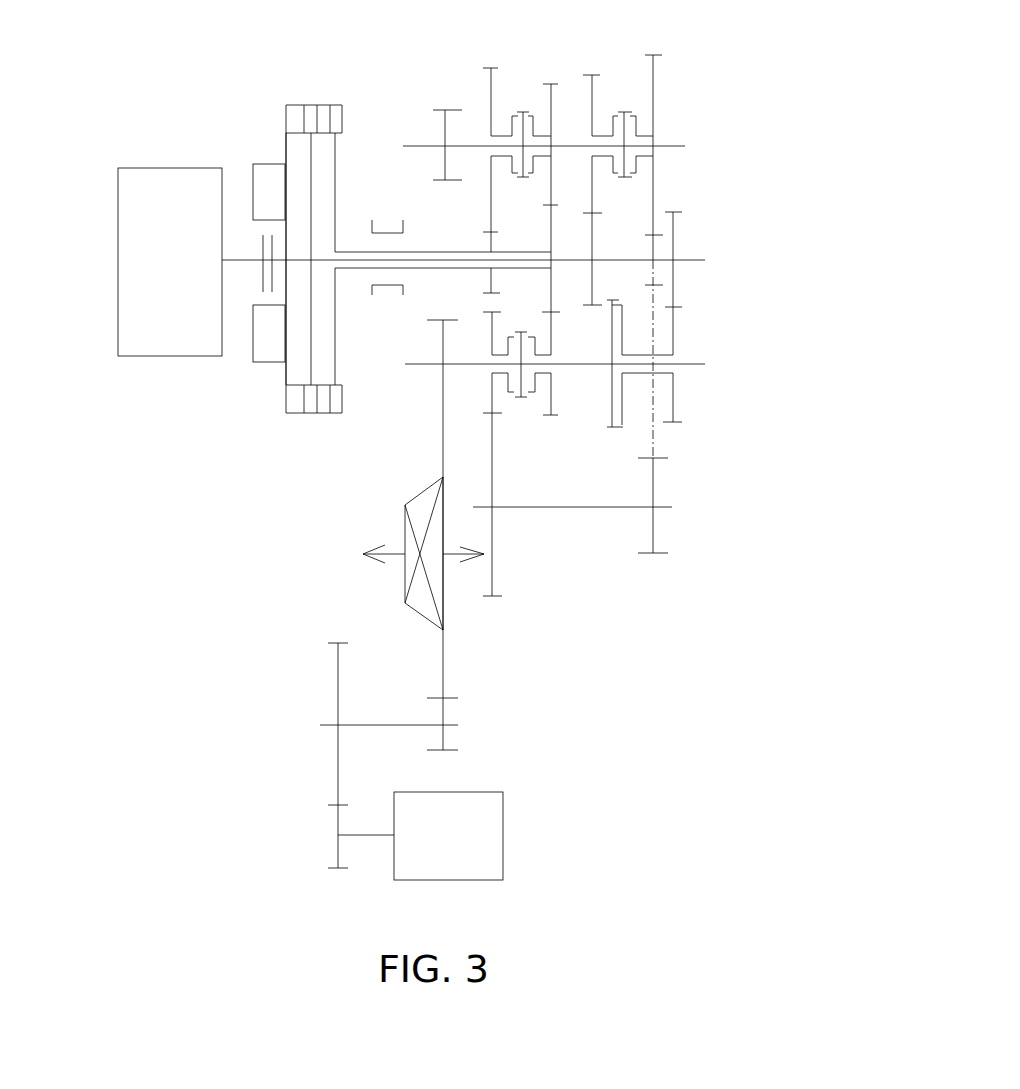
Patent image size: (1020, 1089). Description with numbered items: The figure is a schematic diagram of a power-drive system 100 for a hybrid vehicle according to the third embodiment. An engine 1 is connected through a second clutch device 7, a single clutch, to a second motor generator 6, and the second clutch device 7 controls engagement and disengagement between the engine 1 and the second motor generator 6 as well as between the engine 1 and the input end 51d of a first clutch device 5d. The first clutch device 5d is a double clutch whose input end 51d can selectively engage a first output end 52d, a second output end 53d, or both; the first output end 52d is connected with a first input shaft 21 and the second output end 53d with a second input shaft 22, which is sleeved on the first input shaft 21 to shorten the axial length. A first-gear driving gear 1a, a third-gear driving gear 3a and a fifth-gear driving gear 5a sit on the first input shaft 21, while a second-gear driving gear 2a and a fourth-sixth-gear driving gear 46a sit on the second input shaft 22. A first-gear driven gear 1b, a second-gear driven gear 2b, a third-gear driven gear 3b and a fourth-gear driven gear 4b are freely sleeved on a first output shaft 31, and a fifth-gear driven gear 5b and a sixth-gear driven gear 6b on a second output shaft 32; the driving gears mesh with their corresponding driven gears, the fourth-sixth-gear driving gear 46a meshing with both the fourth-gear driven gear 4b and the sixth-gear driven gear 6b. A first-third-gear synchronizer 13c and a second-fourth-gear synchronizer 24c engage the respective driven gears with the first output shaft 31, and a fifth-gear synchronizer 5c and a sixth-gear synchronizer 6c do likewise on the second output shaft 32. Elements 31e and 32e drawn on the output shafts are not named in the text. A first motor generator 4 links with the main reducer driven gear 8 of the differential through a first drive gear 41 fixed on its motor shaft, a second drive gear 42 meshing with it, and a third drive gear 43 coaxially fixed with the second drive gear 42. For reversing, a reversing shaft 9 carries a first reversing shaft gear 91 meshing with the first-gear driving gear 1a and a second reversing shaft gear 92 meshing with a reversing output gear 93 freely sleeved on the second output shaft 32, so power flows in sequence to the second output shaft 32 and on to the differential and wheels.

The power-drive system 100 is at (808, 71).
The engine 1 is at (132, 236).
The first-gear driving gear 1a is at (650, 240).
The first-gear driven gear 1b is at (653, 85).
The second-gear driving gear 2a is at (490, 232).
The second-gear driven gear 2b is at (491, 68).
The third-gear driving gear 3a is at (593, 240).
The third-gear driven gear 3b is at (593, 75).
The first motor generator 4 is at (463, 847).
The fourth-gear driven gear 4b is at (552, 83).
The fifth-gear driving gear 5a is at (673, 283).
The fifth-gear driven gear 5b is at (673, 395).
The fifth-gear synchronizer 5c is at (612, 420).
The first clutch device 5d is at (222, 375).
The second motor generator 6 is at (270, 180).
The sixth-gear driven gear 6b is at (551, 383).
The sixth-gear synchronizer 6c is at (521, 400).
The second clutch device 7 is at (264, 240).
The main reducer driven gear 8 is at (443, 450).
The reversing shaft 9 is at (672, 507).
The first-third-gear synchronizer 13c is at (626, 112).
The first input shaft 21 is at (705, 260).
The second input shaft 22 is at (400, 273).
The second-fourth-gear synchronizer 24c is at (523, 110).
The first output shaft 31 is at (685, 146).
The countershaft gear 31e is at (433, 110).
The second output shaft 32 is at (705, 364).
The countershaft gear shaft 32e is at (435, 385).
The first drive gear 41 is at (335, 823).
The second drive gear 42 is at (335, 747).
The third drive gear 43 is at (443, 709).
The fourth-sixth-gear driving gear 46a is at (551, 225).
The input end 51d is at (286, 345).
The first output end 52d is at (311, 372).
The second output end 53d is at (335, 377).
The first reversing shaft gear 91 is at (655, 557).
The second reversing shaft gear 92 is at (492, 570).
The reversing output gear 93 is at (492, 400).